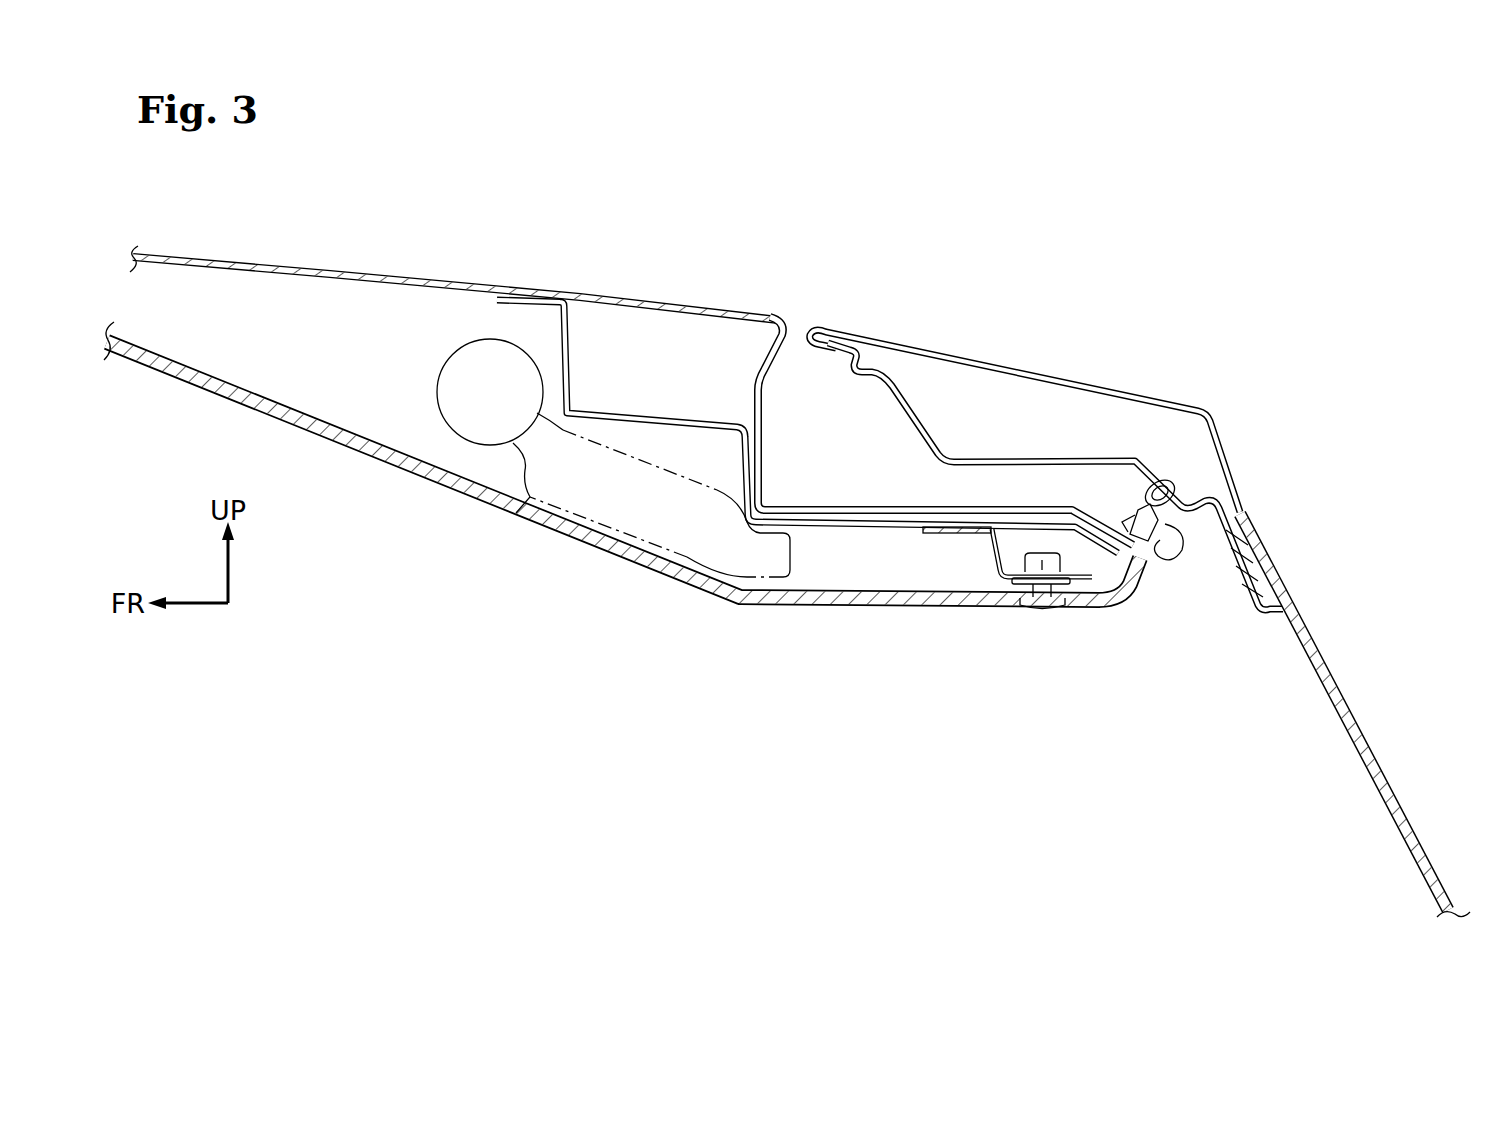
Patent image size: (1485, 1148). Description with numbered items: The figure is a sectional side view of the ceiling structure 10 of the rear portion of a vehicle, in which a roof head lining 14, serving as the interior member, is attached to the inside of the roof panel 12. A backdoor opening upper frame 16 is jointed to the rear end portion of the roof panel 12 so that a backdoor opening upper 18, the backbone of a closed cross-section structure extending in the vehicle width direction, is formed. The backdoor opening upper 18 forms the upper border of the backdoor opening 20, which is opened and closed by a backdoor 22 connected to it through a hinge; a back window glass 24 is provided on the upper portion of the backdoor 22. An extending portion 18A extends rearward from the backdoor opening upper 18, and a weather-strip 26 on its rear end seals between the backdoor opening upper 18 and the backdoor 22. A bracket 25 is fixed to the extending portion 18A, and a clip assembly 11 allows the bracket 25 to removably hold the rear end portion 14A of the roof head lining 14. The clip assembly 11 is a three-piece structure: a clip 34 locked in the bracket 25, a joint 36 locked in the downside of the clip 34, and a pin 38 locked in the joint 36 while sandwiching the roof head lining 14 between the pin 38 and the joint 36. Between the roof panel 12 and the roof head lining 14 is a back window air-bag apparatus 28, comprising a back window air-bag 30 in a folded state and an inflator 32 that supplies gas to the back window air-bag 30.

The ceiling structure of a rear portion of a vehicle 10 is at (1025, 280).
The clip assembly 11 is at (983, 665).
The roof panel 12 is at (374, 273).
The roof head lining 14 is at (381, 466).
The rear end portion 14A is at (1114, 610).
The backdoor opening upper frame 16 is at (570, 358).
The backdoor opening upper 18 is at (777, 315).
The extending portion 18A is at (848, 503).
The backdoor opening 20 is at (1150, 580).
The backdoor 22 is at (1242, 450).
The back window glass 24 is at (1327, 664).
The bracket 25 is at (985, 544).
The weather-strip 26 is at (1140, 492).
The back window air-bag apparatus 28 is at (489, 312).
The back window air-bag 30 is at (521, 517).
The inflator 32 is at (448, 374).
The clip 34 is at (1018, 614).
The joint 36 is at (1067, 613).
The pin 38 is at (1043, 612).